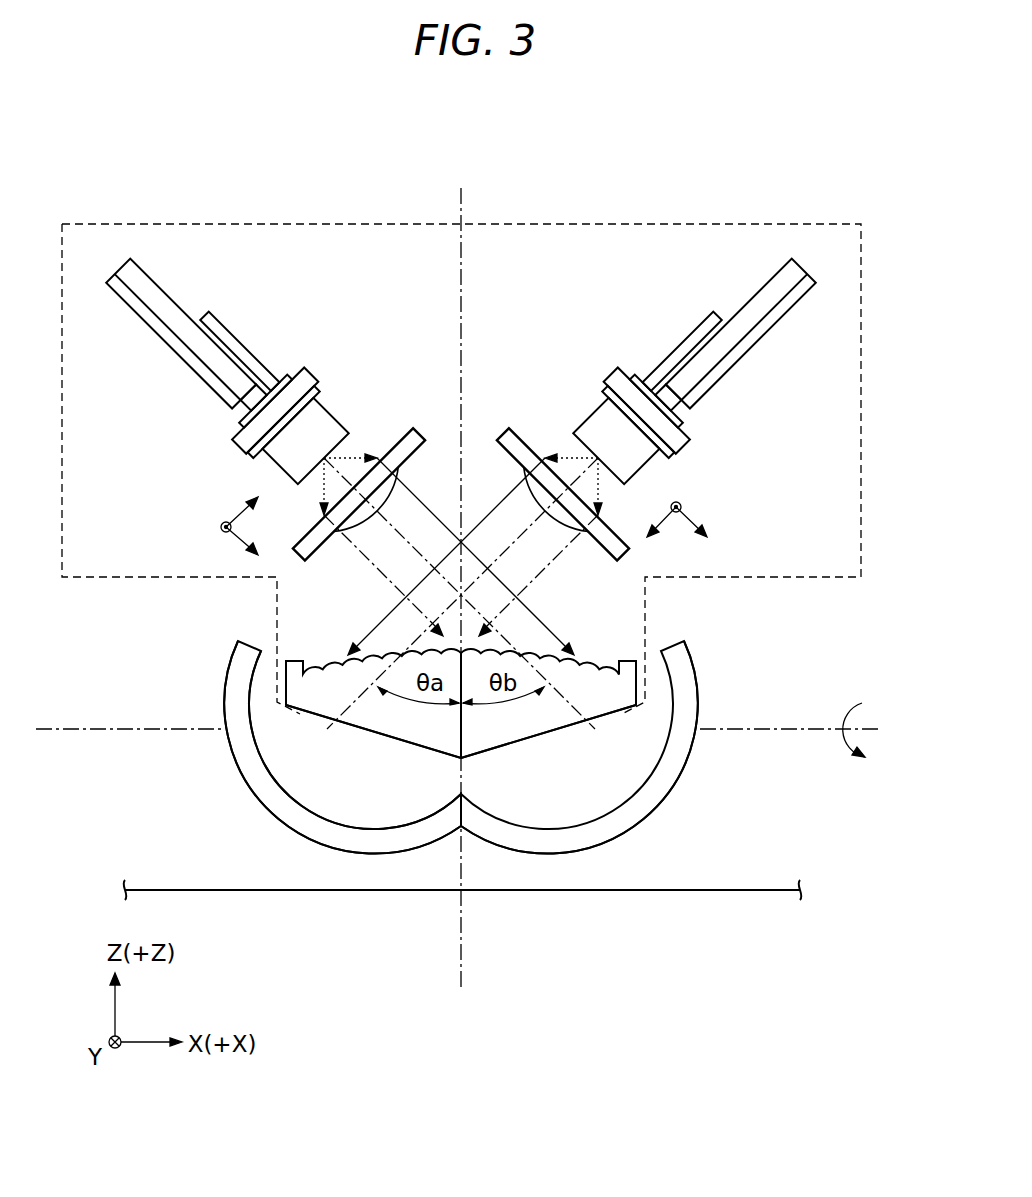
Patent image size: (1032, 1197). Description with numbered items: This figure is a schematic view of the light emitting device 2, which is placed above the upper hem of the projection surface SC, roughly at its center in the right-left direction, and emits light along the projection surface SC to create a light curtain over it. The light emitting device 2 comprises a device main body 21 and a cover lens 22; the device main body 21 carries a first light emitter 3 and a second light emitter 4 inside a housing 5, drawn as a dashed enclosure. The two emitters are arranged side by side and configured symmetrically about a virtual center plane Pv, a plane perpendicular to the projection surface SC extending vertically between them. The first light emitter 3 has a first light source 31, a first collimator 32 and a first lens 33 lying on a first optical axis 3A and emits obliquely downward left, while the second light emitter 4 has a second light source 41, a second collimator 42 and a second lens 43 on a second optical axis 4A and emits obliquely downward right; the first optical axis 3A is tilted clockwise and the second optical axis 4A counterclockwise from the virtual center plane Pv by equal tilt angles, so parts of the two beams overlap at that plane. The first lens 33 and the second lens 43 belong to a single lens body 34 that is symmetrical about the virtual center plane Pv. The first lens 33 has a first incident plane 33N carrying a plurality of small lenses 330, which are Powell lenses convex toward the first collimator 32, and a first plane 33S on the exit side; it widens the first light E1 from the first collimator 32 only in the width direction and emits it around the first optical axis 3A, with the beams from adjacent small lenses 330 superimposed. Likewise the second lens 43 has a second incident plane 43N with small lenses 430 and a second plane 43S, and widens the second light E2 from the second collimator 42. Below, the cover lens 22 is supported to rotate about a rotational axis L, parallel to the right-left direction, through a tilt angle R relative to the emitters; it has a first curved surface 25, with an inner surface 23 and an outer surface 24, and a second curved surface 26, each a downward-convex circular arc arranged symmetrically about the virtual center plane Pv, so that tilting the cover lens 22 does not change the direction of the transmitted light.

The light emitting device 2 is at (788, 175).
The first light emitter 3 is at (579, 477).
The second light emitter 4 is at (343, 477).
The housing 5 is at (828, 223).
The device main body 21 is at (803, 583).
The cover lens 22 is at (688, 678).
The inner surface 23 is at (279, 795).
The outer surface 24 is at (258, 808).
The first curved surface 25 is at (226, 752).
The second curved surface 26 is at (696, 755).
The first light source 31 is at (589, 418).
The first collimator 32 is at (508, 430).
The first lens 33 is at (323, 698).
The lens body 34 is at (640, 663).
The second light source 41 is at (333, 418).
The second collimator 42 is at (415, 430).
The second lens 43 is at (599, 698).
The first incident plane 33N is at (352, 652).
The second incident plane 43N is at (570, 652).
The small lenses 330 is at (407, 655).
The small lenses 430 is at (515, 655).
The first plane 33S is at (379, 731).
The second plane 43S is at (543, 731).
The first optical axis 3A is at (490, 475).
The second optical axis 4A is at (432, 475).
The first light E1 is at (550, 563).
The second light E2 is at (372, 563).
The projection surface SC is at (755, 888).
The virtual center plane Pv is at (462, 942).
The rotational axis L is at (470, 730).
The tilt angle R is at (864, 741).